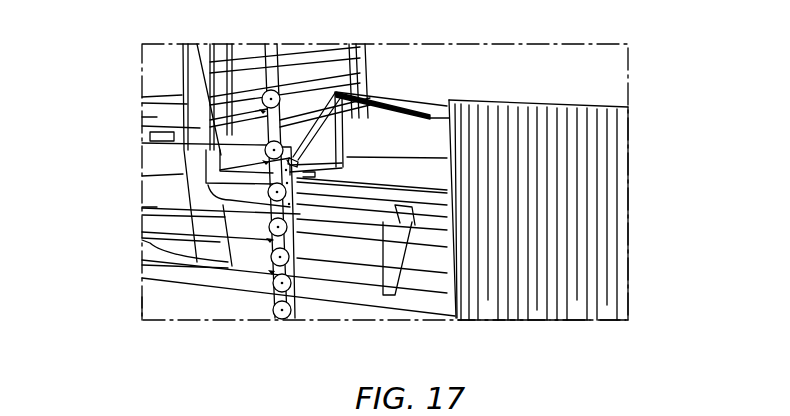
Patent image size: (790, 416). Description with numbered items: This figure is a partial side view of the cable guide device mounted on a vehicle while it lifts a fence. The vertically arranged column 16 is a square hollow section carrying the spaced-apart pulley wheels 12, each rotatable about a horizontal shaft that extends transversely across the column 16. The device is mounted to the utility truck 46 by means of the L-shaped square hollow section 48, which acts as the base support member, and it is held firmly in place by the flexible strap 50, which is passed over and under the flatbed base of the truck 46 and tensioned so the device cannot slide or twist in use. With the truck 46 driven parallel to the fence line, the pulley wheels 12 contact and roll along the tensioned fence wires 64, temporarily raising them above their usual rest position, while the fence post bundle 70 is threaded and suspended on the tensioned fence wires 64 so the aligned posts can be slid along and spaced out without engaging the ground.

The pulley wheel 12 is at (284, 45).
The column 16 is at (268, 57).
The utility truck 46 is at (157, 117).
The L-shaped square hollow section 48 is at (316, 172).
The flexible strap 50 is at (398, 104).
The tensioned fence wires 64 is at (220, 215).
The fence post bundle 70 is at (597, 160).